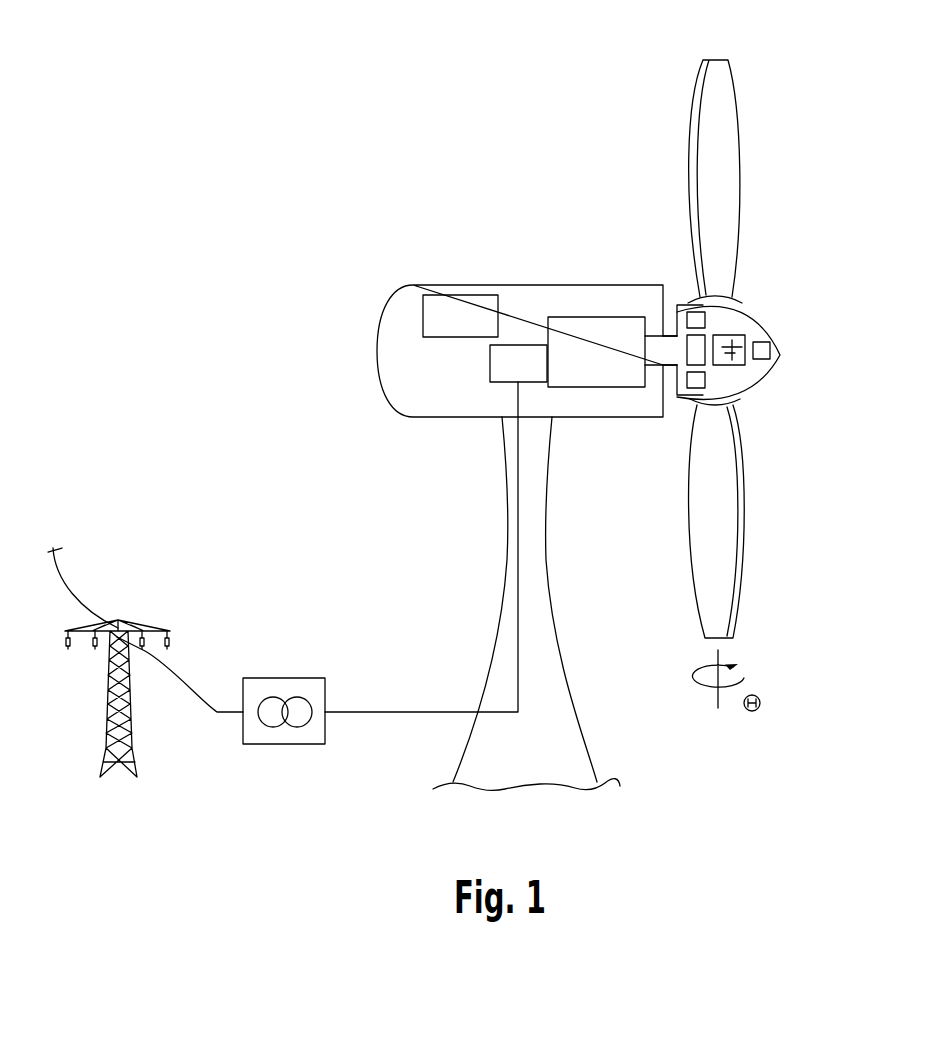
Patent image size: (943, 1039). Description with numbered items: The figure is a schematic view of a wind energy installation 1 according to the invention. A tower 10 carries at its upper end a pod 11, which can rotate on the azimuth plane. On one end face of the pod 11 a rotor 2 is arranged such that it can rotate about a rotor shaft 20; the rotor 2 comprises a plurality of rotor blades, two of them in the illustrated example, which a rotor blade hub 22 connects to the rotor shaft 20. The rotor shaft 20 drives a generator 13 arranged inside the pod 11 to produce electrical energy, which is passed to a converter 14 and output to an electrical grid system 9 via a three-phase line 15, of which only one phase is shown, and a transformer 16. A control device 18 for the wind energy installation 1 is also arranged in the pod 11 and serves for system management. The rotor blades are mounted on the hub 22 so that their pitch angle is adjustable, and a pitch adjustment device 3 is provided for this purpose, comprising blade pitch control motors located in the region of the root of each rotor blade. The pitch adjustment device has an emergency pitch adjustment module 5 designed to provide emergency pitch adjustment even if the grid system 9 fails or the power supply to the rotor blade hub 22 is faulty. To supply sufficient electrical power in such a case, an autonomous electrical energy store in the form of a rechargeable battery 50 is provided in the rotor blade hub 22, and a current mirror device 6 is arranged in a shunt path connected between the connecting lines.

The wind energy installation 1 is at (436, 473).
The rotor 2 is at (668, 172).
The pitch adjustment device 3 is at (693, 347).
The emergency pitch adjustment module 5 is at (792, 293).
The current mirror device 6 is at (770, 350).
The electrical grid system 9 is at (132, 621).
The tower 10 is at (507, 557).
The pod 11 is at (388, 312).
The generator 13 is at (612, 367).
The converter 14 is at (534, 378).
The three-phase line 15 is at (385, 712).
The transformer 16 is at (283, 678).
The control device 18 is at (476, 331).
The rotor shaft 20 is at (670, 368).
The rotor blade hub 22 is at (752, 372).
The rechargeable battery 50 is at (738, 340).